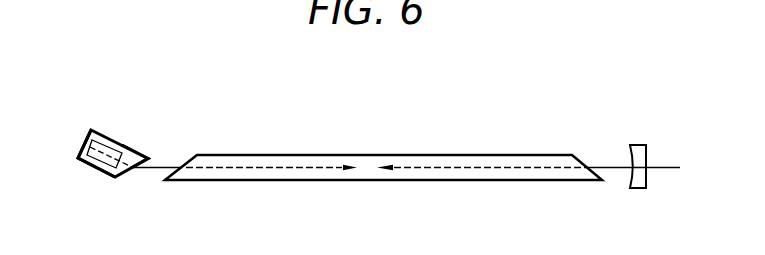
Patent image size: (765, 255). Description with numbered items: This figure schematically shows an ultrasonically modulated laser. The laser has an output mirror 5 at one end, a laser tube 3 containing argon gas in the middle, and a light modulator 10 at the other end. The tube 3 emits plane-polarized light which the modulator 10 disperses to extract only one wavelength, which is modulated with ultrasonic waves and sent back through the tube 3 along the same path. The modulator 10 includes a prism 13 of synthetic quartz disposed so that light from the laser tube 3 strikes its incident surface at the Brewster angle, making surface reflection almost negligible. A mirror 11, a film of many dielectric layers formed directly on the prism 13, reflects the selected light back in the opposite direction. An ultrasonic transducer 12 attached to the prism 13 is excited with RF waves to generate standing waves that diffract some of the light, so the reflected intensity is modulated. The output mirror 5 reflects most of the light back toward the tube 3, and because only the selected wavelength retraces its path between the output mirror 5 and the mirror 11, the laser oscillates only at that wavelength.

The light modulator 10 is at (100, 118).
The mirror 11 is at (89, 140).
The ultrasonic transducer 12 is at (113, 150).
The prism 13 is at (136, 147).
The laser tube 3 is at (418, 155).
The output mirror 5 is at (639, 145).